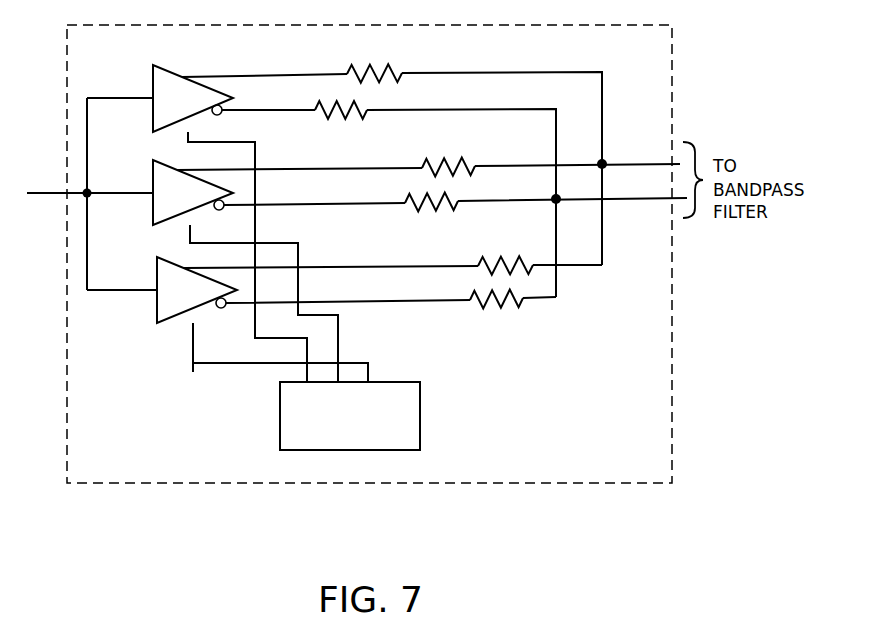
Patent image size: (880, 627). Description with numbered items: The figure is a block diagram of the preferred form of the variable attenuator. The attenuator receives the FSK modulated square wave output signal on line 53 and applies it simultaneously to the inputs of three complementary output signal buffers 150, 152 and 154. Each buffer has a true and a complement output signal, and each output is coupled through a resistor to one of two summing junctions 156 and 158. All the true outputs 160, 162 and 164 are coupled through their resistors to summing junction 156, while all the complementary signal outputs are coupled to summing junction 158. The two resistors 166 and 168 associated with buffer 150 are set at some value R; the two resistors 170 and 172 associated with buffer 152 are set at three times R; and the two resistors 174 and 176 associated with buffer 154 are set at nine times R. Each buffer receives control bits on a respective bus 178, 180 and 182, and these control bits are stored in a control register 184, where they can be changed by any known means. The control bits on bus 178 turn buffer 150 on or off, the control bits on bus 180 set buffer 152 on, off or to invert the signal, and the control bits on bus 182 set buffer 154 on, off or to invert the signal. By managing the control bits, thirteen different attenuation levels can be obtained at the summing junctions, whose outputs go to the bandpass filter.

The line 53 is at (65, 195).
The complementary output signal buffer 150 is at (165, 65).
The complementary output signal buffer 152 is at (153, 162).
The complementary output signal buffer 154 is at (157, 258).
The summing junction 156 is at (602, 163).
The summing junction 158 is at (556, 201).
The true output 160 is at (262, 75).
The true output 162 is at (323, 168).
The true output 164 is at (330, 267).
The resistor 166 is at (398, 66).
The resistor 168 is at (350, 100).
The resistor 170 is at (465, 160).
The resistor 172 is at (452, 198).
The resistor 174 is at (480, 258).
The resistor 176 is at (480, 305).
The bus 178 is at (255, 338).
The bus 180 is at (340, 312).
The bus 182 is at (193, 372).
The control register 184 is at (421, 398).